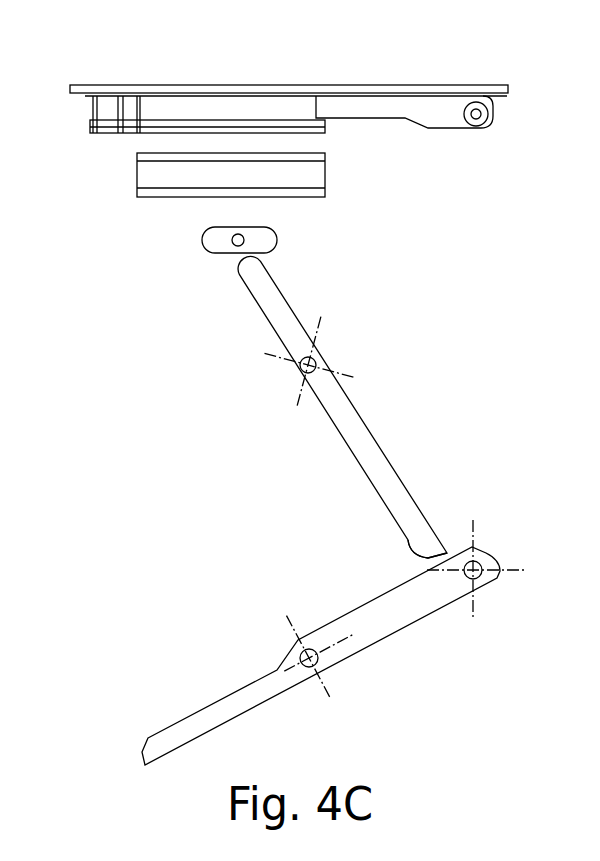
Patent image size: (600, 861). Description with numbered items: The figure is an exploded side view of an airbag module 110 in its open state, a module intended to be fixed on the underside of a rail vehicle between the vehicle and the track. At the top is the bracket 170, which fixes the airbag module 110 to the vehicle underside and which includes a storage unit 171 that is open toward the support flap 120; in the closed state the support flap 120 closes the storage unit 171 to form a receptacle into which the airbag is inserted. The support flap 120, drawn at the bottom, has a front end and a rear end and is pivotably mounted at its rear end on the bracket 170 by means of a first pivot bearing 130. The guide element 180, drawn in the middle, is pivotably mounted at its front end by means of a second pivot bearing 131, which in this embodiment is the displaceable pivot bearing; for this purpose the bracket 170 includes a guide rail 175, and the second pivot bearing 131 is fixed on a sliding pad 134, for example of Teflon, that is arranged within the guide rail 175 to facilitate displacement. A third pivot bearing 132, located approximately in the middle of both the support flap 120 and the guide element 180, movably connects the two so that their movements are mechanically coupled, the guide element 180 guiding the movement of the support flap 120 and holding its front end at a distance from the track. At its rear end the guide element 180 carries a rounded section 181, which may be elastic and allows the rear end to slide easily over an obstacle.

The airbag module 110 is at (112, 84).
The bracket 170 is at (423, 84).
The storage unit 171 is at (333, 134).
The first pivot bearing 130 is at (476, 134).
The guide rail 175 is at (133, 177).
The sliding pad 134 is at (201, 240).
The second pivot bearing 131 is at (232, 247).
The guide element 180 is at (378, 440).
The rounded section 181 is at (397, 538).
The third pivot bearing 132 is at (296, 373).
The support flap 120 is at (418, 632).